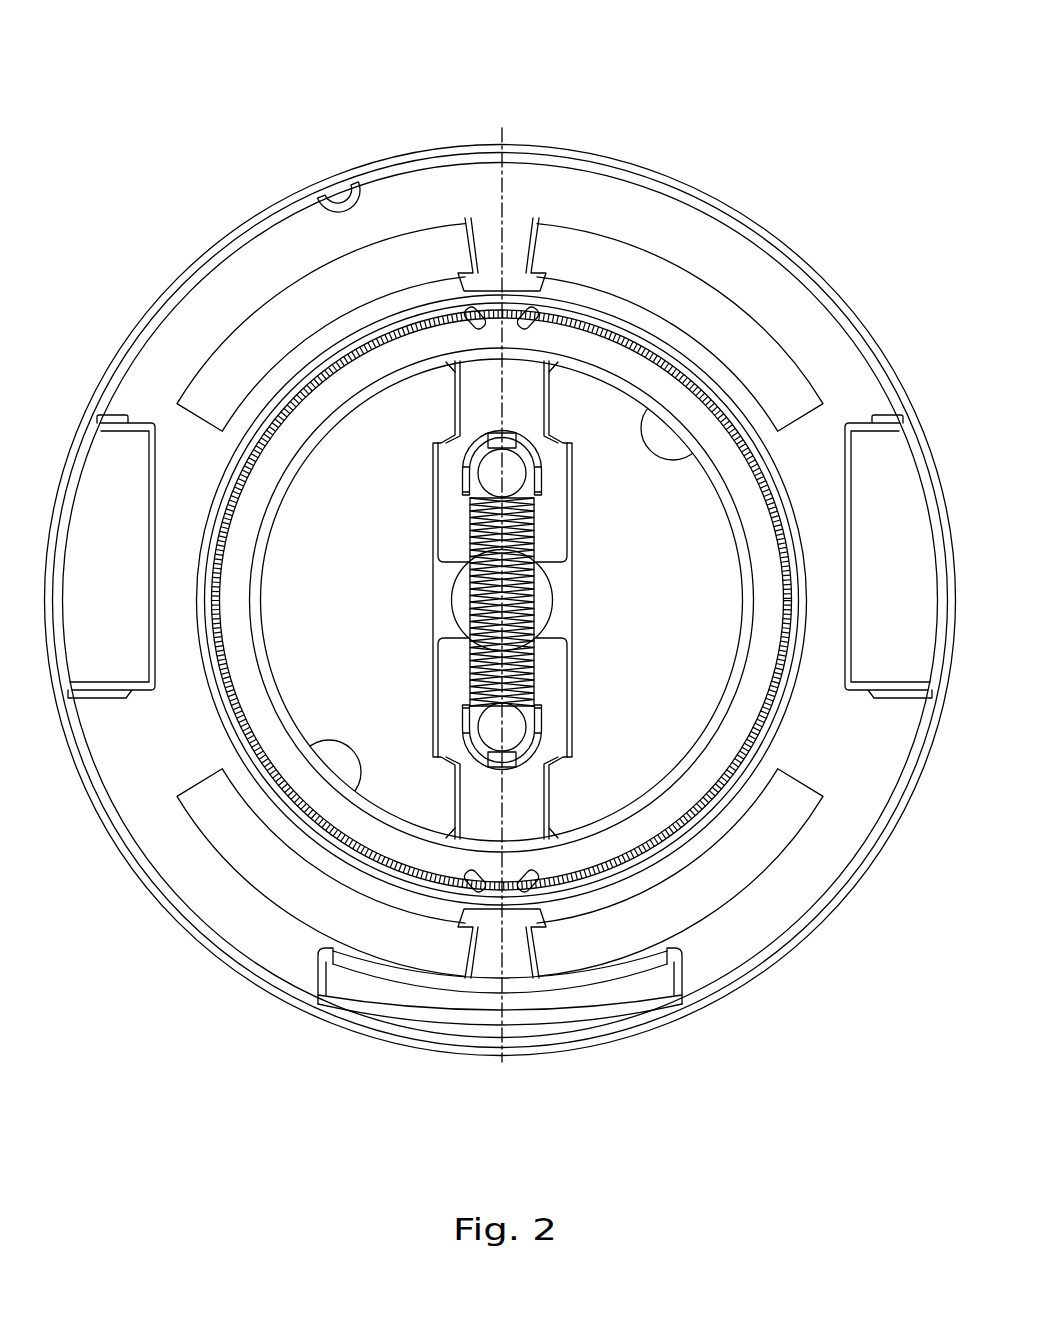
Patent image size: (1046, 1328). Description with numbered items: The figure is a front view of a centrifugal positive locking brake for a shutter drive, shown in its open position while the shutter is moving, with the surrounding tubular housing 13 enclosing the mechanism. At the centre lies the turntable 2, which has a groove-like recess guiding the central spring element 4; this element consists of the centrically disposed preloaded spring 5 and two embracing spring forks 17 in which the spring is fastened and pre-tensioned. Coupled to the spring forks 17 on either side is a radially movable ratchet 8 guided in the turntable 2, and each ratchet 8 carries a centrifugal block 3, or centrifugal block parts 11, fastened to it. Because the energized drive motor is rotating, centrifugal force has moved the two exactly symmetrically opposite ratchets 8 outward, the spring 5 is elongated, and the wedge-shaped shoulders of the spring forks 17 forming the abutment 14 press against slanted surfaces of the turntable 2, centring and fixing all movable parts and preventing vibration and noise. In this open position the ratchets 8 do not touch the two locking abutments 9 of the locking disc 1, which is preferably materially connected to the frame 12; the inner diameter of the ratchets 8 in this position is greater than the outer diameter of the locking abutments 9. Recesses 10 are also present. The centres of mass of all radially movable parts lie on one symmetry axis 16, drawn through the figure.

The locking disc 1 is at (577, 342).
The turntable 2 is at (644, 490).
The centrifugal blocks 3 is at (527, 616).
The centrifugal block parts 11 is at (333, 290).
The central spring element 4 is at (698, 584).
The spring forks 17 is at (556, 463).
The spring 5 is at (490, 687).
The ratchet 8 is at (480, 283).
The locking abutment 9 is at (502, 316).
The recesses 10 is at (520, 329).
The frame 12 is at (173, 850).
The tubular housing/protective sleeve 13 is at (370, 170).
The inner abutment, radial clamping abutment 14 is at (558, 765).
The symmetry axis 16 is at (503, 135).